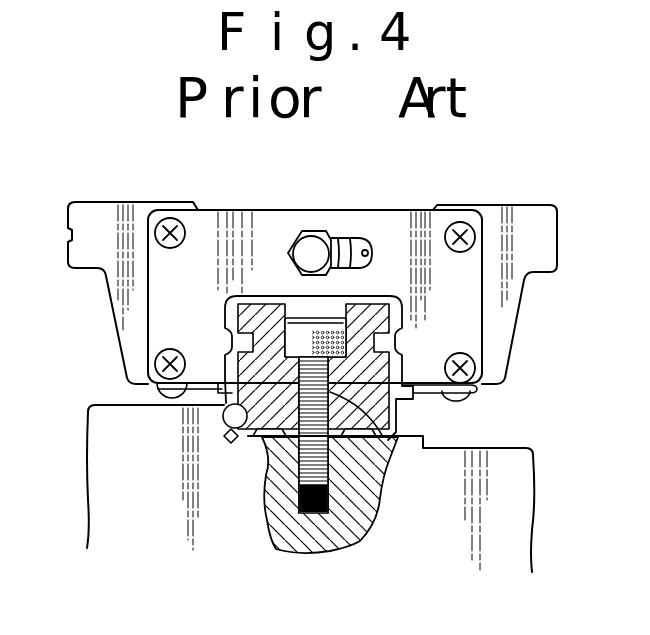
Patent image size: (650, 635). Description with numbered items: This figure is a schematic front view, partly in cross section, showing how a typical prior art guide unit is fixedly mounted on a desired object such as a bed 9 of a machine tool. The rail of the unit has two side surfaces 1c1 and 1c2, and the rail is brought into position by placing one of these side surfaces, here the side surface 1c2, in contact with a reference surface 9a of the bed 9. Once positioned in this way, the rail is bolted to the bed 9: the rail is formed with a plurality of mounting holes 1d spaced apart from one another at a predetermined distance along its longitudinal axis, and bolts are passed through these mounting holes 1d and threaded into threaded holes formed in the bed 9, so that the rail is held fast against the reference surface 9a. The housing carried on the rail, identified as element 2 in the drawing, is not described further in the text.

The housing 2 is at (409, 210).
The side surface 1c1 is at (398, 415).
The side surface 1c2 is at (238, 443).
The mounting hole 1d is at (387, 470).
The bed 9 is at (103, 508).
The reference surface 9a is at (224, 417).